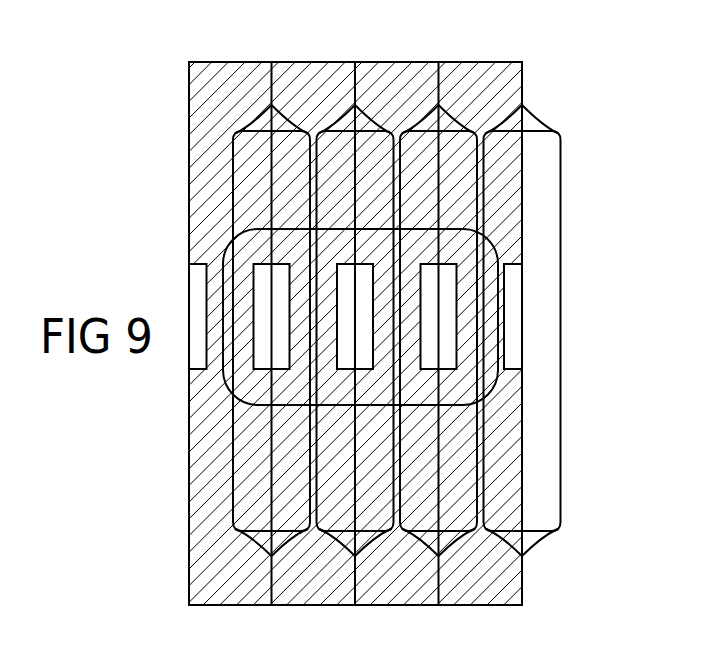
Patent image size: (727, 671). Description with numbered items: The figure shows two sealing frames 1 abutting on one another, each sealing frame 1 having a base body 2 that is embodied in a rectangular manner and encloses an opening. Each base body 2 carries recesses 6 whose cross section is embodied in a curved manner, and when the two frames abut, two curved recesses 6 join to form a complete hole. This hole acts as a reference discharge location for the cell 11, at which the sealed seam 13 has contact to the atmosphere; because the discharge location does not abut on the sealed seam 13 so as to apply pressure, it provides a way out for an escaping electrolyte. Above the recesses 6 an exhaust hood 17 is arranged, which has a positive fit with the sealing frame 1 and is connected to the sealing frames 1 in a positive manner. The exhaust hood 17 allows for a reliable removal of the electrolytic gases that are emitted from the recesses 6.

The sealing frame 1 is at (487, 73).
The base body 2 is at (492, 592).
The recesses 6 is at (421, 301).
The cell 11 is at (561, 177).
The sealed seam 13 is at (272, 61).
The exhaust hood 17 is at (492, 393).